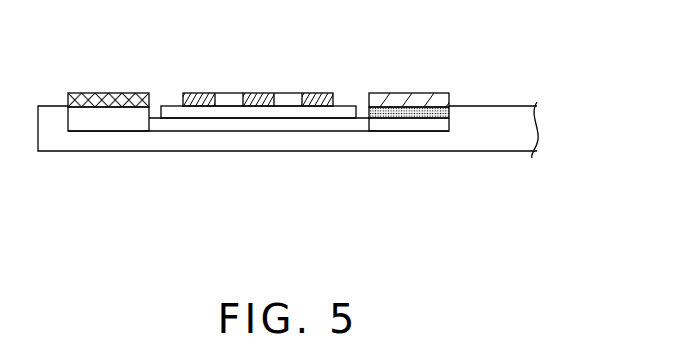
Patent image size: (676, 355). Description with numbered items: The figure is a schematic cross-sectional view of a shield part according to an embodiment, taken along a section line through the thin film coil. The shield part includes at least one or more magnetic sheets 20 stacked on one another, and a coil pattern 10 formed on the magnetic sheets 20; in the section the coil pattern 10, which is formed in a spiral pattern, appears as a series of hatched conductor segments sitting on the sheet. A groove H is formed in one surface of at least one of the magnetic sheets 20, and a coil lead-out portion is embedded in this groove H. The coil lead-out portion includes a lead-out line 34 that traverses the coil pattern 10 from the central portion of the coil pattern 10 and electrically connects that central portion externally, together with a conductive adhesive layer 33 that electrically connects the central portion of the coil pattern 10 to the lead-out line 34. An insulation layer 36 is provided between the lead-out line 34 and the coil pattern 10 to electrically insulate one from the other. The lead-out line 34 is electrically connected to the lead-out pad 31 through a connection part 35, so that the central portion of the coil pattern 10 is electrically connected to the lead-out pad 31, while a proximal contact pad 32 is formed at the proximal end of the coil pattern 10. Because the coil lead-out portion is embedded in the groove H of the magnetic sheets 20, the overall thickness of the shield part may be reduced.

The coil pattern 10 is at (318, 92).
The magnetic sheets 20 is at (493, 128).
The lead-out pad 31 is at (104, 93).
The proximal contact pad 32 is at (406, 90).
The conductive adhesive layer 33 is at (430, 118).
The lead-out line 34 is at (393, 123).
The connection part 35 is at (113, 125).
The insulation layer 36 is at (278, 112).
The groove H is at (205, 125).